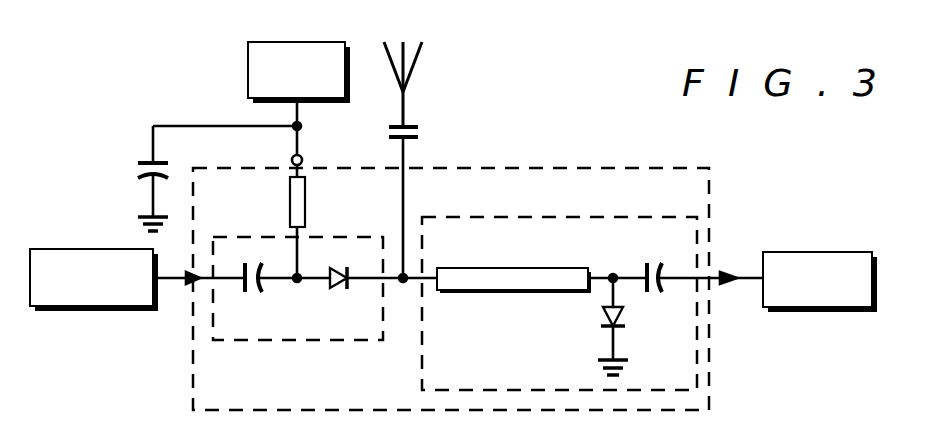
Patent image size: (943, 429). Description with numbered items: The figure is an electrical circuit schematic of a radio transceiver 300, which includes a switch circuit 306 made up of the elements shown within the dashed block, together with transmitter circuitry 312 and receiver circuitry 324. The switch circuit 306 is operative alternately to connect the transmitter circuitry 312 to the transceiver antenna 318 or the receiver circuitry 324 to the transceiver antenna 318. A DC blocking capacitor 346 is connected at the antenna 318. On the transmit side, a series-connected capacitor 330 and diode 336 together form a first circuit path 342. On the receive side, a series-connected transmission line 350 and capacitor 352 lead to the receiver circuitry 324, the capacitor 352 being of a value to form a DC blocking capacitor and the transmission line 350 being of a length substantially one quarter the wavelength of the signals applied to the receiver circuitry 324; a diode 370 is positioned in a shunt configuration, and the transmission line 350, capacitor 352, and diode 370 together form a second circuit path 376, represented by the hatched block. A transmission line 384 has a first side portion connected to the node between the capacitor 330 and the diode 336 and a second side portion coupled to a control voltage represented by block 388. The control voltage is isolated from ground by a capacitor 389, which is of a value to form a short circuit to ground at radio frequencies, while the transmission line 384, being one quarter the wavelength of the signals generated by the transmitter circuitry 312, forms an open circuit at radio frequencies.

The radio transceiver 300 is at (794, 148).
The switch circuit 306 is at (561, 167).
The transmitter circuitry 312 is at (92, 249).
The transceiver antenna 318 is at (418, 60).
The receiver circuitry 324 is at (818, 252).
The capacitor 330 is at (251, 292).
The diode 336 is at (343, 288).
The first circuit path 342 is at (283, 340).
The DC blocking capacitor 346 is at (418, 136).
The transmission line 350 is at (509, 268).
The capacitor 352 is at (652, 264).
The diode 370 is at (625, 326).
The second circuit path 376 is at (422, 352).
The transmission line 384 is at (305, 198).
The control voltage 388 is at (248, 70).
The capacitor 389 is at (138, 170).